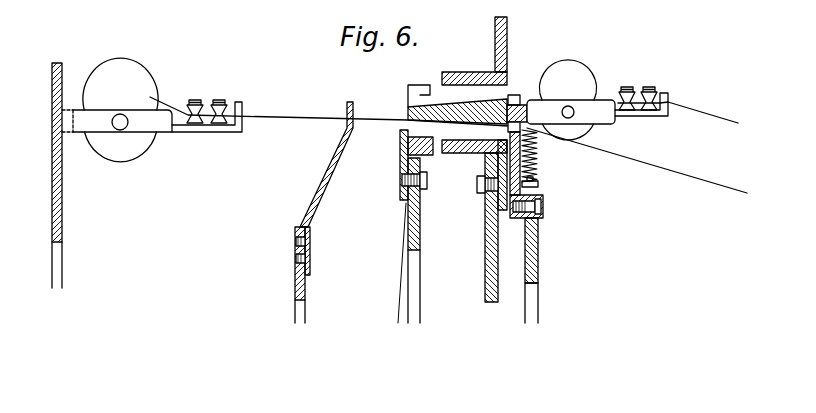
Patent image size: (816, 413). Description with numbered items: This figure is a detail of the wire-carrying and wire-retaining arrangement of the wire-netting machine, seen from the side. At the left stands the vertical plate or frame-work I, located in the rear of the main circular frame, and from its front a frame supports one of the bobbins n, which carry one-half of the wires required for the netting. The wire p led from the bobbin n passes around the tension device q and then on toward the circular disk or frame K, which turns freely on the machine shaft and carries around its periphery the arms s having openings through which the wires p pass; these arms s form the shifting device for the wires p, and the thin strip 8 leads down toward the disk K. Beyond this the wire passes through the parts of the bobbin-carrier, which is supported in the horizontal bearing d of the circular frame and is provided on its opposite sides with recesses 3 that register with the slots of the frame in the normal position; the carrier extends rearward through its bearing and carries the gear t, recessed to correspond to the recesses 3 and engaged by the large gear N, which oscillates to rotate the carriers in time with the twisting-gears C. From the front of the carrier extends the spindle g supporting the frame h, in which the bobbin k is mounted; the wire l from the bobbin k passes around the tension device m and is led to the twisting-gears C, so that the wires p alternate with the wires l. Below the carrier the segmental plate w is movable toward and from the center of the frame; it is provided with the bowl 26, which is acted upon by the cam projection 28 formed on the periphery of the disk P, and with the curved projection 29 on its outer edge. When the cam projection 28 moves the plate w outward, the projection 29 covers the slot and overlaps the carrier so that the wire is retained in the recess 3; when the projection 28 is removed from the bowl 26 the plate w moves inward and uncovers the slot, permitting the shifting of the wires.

The vertical plate or frame-work I is at (62, 184).
The bobbins n is at (152, 110).
The tension devices q is at (226, 100).
The cord p' is at (329, 115).
The strip / arm 8 is at (343, 161).
The circular disk or frame K is at (295, 285).
The large gear N is at (400, 192).
The gears t is at (408, 86).
The recesses 3 is at (410, 98).
The arms s is at (447, 107).
The horizontal bearings d is at (487, 73).
The split gears C is at (485, 250).
The curved projections 29 is at (517, 94).
The spindles g is at (535, 100).
The frames h is at (571, 112).
The bobbins k is at (592, 130).
The tension devices m is at (661, 93).
The wires l is at (678, 120).
The wires p is at (637, 160).
The segmental plates w is at (540, 183).
The bowls 26 is at (544, 203).
The cam projections 28 is at (538, 233).
The disk P is at (538, 268).